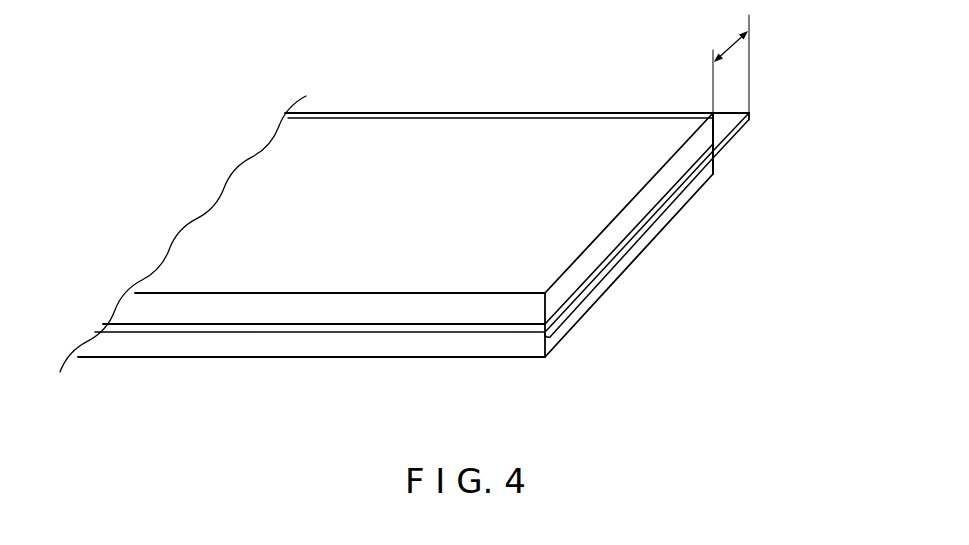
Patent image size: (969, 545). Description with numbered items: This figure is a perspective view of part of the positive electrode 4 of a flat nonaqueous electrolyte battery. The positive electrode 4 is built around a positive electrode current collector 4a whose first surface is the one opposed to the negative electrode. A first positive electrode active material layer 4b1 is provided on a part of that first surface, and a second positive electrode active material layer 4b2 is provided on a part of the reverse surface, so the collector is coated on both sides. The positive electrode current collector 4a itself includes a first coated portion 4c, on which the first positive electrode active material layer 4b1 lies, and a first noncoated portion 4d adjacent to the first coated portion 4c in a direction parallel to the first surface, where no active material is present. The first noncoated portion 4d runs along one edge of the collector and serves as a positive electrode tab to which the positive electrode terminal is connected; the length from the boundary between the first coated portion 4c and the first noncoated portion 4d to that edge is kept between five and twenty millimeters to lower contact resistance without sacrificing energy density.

The positive electrode 4 is at (437, 215).
The positive electrode current collector 4a is at (392, 328).
The first positive electrode active material layer 4b1 is at (448, 305).
The second positive electrode active material layer 4b2 is at (500, 347).
The first coated portion 4c is at (629, 246).
The first noncoated portion 4d is at (745, 126).